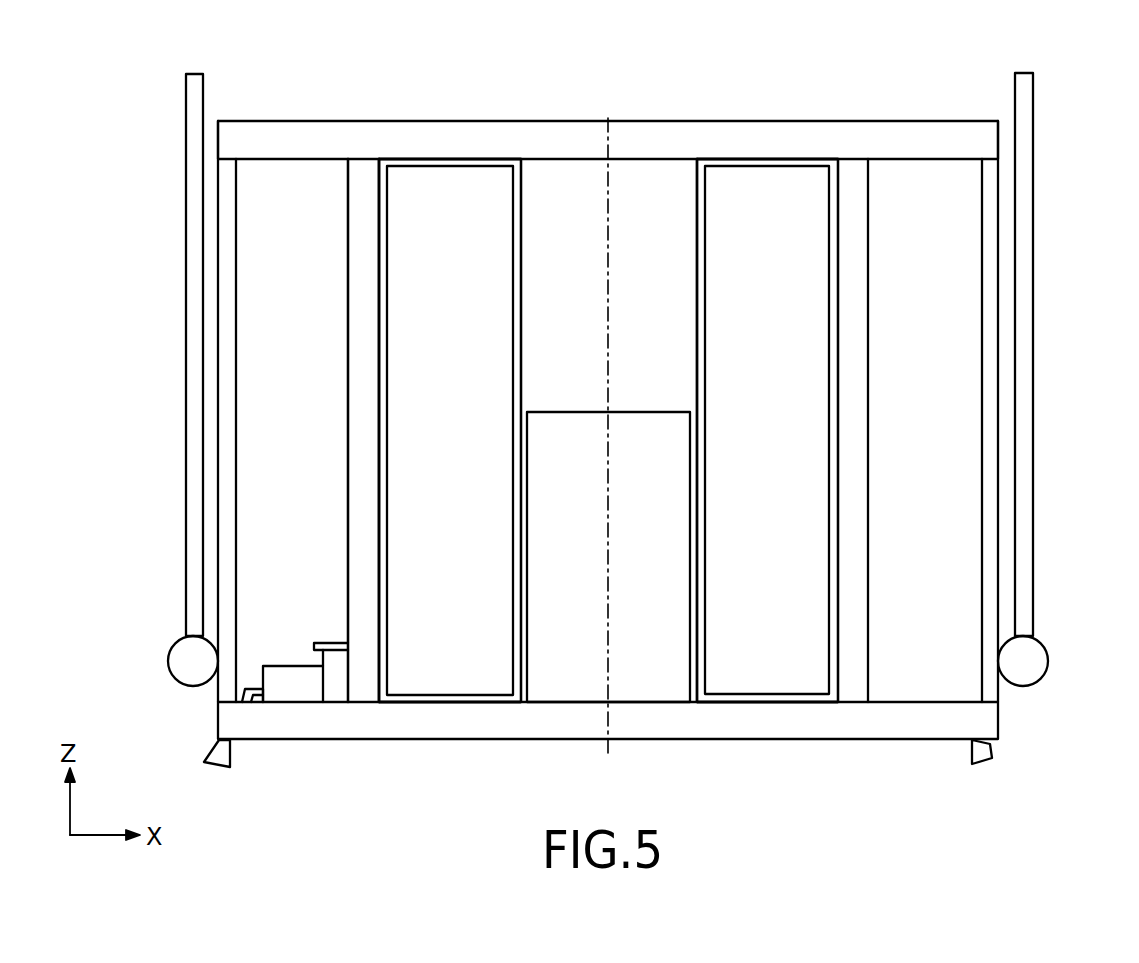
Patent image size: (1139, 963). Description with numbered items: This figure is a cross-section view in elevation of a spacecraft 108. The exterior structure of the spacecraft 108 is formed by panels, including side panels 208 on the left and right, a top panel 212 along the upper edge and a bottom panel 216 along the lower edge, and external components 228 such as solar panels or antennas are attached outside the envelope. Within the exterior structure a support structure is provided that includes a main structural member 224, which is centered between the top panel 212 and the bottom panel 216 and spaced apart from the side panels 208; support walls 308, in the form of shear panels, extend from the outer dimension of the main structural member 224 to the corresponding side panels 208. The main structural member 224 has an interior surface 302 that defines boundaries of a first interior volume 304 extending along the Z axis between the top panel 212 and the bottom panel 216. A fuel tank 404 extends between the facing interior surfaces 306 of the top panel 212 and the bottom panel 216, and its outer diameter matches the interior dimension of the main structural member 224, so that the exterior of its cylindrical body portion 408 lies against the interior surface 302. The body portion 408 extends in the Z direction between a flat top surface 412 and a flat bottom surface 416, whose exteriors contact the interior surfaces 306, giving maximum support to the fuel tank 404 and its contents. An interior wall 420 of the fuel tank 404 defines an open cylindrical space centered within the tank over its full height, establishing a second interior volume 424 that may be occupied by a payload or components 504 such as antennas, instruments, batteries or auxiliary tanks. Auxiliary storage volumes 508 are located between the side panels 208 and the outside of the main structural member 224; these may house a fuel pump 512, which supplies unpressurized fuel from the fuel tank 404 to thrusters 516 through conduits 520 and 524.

The spacecraft 108 is at (864, 53).
The side panels 208 is at (228, 201).
The top panel 212 is at (674, 131).
The bottom panel 216 is at (880, 722).
The main structural member 224 is at (362, 173).
The external components 228 is at (1027, 113).
The interior surface 302 is at (379, 186).
The first interior volume 304 is at (571, 180).
The interior surfaces 306 is at (753, 163).
The support walls 308 is at (243, 280).
The fuel tank 404 is at (430, 693).
The body portion 408 is at (380, 518).
The top surface 412 is at (463, 164).
The bottom surface 416 is at (722, 697).
The interior wall 420 is at (699, 167).
The second interior volume 424 is at (629, 195).
The payload or components 504 is at (632, 683).
The auxiliary storage volumes 508 is at (258, 401).
The fuel pump 512 is at (300, 688).
The thrusters 516 is at (218, 746).
The conduit 520 is at (327, 641).
The conduit 524 is at (250, 695).